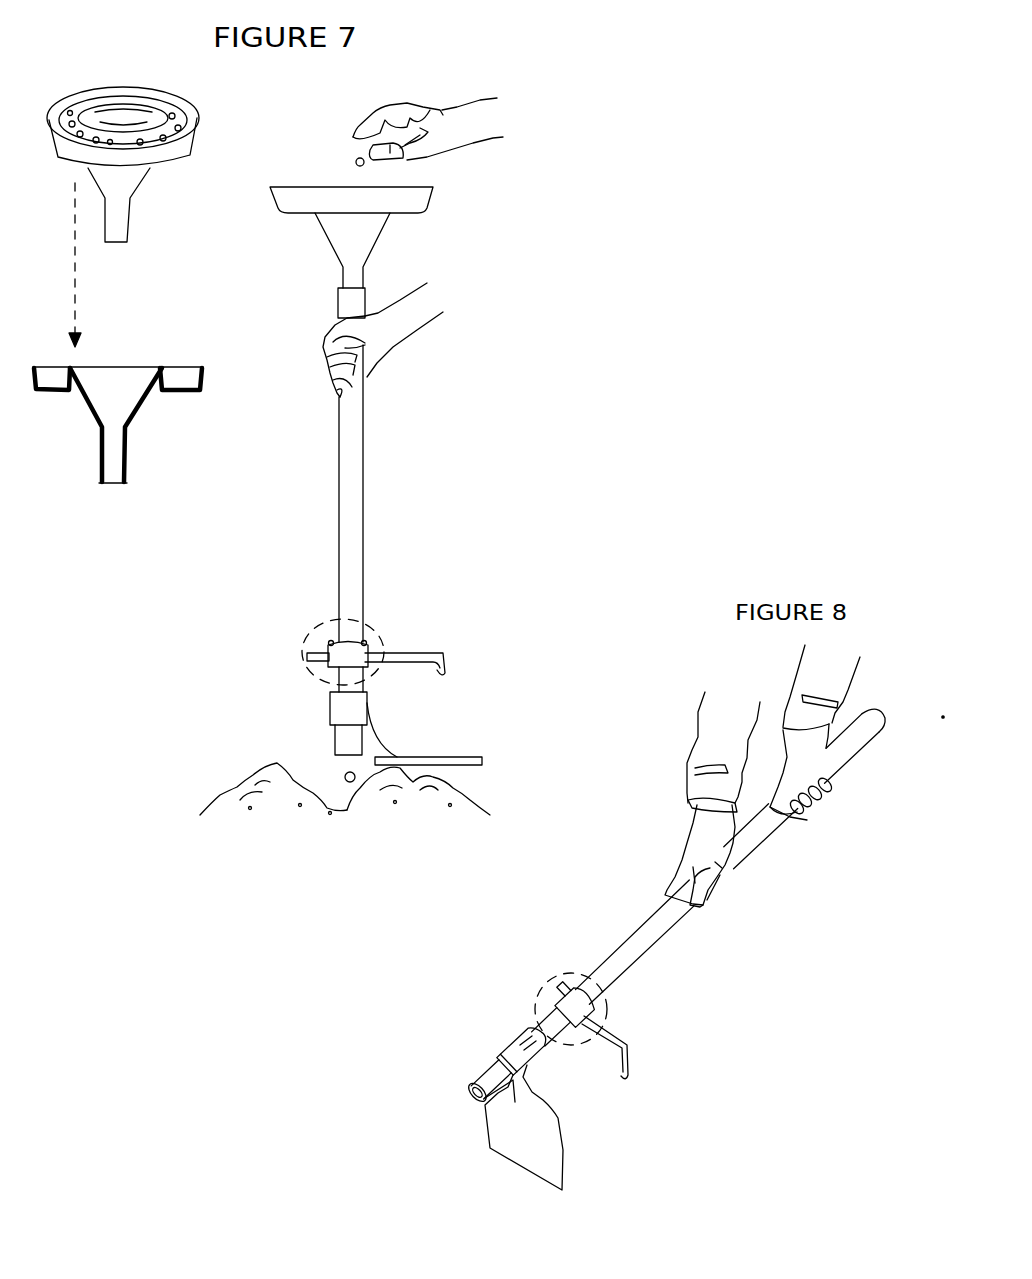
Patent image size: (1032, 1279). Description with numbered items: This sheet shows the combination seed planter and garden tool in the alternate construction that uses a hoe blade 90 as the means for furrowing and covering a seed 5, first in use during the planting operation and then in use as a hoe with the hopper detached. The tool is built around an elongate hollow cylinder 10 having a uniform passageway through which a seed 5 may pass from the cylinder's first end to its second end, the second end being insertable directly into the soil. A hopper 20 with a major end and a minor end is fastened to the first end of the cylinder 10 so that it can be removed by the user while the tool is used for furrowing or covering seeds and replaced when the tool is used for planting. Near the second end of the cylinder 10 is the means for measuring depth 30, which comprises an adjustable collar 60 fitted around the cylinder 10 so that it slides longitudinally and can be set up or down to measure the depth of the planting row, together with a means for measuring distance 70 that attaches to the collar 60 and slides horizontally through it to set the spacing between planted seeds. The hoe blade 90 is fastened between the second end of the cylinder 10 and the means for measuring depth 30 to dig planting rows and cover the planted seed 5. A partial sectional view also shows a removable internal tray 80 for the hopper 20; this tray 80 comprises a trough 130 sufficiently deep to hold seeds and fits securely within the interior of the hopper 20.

In FIG. 7, the seed 5 is at (354, 158).
In FIG. 7, the elongate hollow cylinder 10 is at (365, 465).
In FIG. 8, the elongate hollow cylinder 10 is at (658, 943).
In FIG. 7, the hopper 20 is at (75, 415).
In FIG. 7, the means for measuring depth 30 is at (387, 636).
In FIG. 8, the means for measuring depth 30 is at (542, 983).
In FIG. 7, the adjustable collar 60 is at (330, 642).
In FIG. 8, the adjustable collar 60 is at (565, 990).
In FIG. 7, the means for measuring distance 70 is at (441, 652).
In FIG. 8, the means for measuring distance 70 is at (632, 1044).
In FIG. 7, the removable internal tray 80 is at (187, 157).
In FIG. 7, the hoe blade 90 is at (447, 756).
In FIG. 8, the hoe blade 90 is at (545, 1132).
In FIG. 7, the trough 130 is at (178, 114).